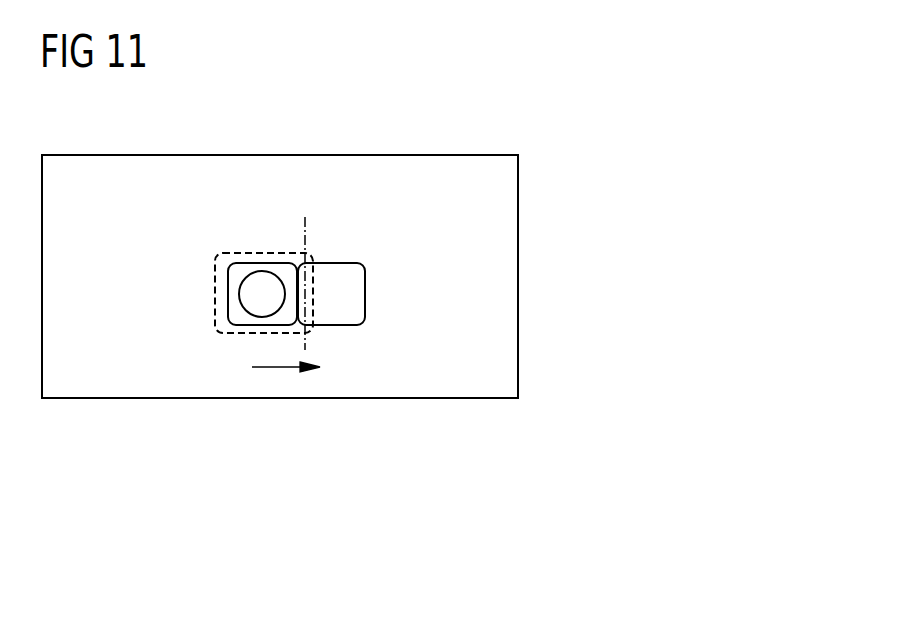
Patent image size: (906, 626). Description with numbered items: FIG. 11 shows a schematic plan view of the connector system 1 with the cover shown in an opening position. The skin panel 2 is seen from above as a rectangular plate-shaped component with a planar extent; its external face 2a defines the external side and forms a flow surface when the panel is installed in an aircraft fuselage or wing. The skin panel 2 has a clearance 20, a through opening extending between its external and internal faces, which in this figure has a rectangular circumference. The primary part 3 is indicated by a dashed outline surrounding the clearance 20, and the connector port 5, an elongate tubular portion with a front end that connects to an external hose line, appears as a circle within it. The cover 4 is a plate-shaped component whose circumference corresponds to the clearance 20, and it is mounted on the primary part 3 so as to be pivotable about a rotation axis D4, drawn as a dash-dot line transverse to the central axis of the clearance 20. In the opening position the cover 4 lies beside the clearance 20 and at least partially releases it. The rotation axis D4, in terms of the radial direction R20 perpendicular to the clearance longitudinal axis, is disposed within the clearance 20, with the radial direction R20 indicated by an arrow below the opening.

The connector system 1 is at (523, 123).
The skin panel 2 is at (321, 167).
The external face 2a is at (501, 294).
The primary part 3 is at (216, 282).
The clearance 20 is at (231, 279).
The cover 4 is at (353, 292).
The connector port 5 is at (254, 292).
The rotation axis D4 is at (308, 222).
The radial direction R20 is at (283, 370).